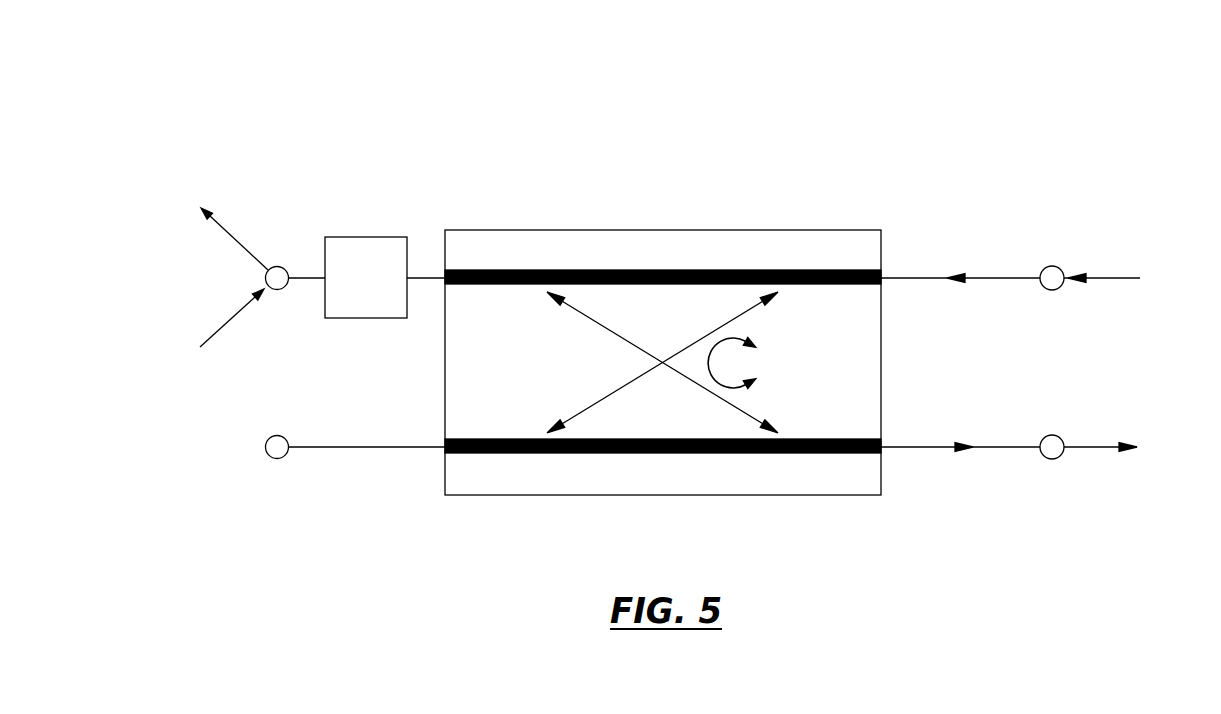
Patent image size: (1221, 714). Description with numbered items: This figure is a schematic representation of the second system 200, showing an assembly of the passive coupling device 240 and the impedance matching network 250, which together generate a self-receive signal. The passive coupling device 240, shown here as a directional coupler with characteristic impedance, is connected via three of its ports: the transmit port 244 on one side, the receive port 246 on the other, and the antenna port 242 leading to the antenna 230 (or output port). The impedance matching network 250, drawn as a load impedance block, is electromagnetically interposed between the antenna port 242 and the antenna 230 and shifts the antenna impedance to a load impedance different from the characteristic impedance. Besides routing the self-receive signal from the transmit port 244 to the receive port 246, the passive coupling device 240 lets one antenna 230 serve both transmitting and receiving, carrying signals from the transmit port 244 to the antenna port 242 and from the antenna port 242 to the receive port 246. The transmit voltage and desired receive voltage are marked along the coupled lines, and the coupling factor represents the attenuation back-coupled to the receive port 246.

The second system 200 is at (190, 79).
The antenna 230 is at (262, 279).
The passive coupling device 240 is at (640, 228).
The antenna port 242 is at (436, 288).
The transmit port 244 is at (888, 268).
The receive port 246 is at (888, 460).
The impedance matching network 250 is at (367, 226).